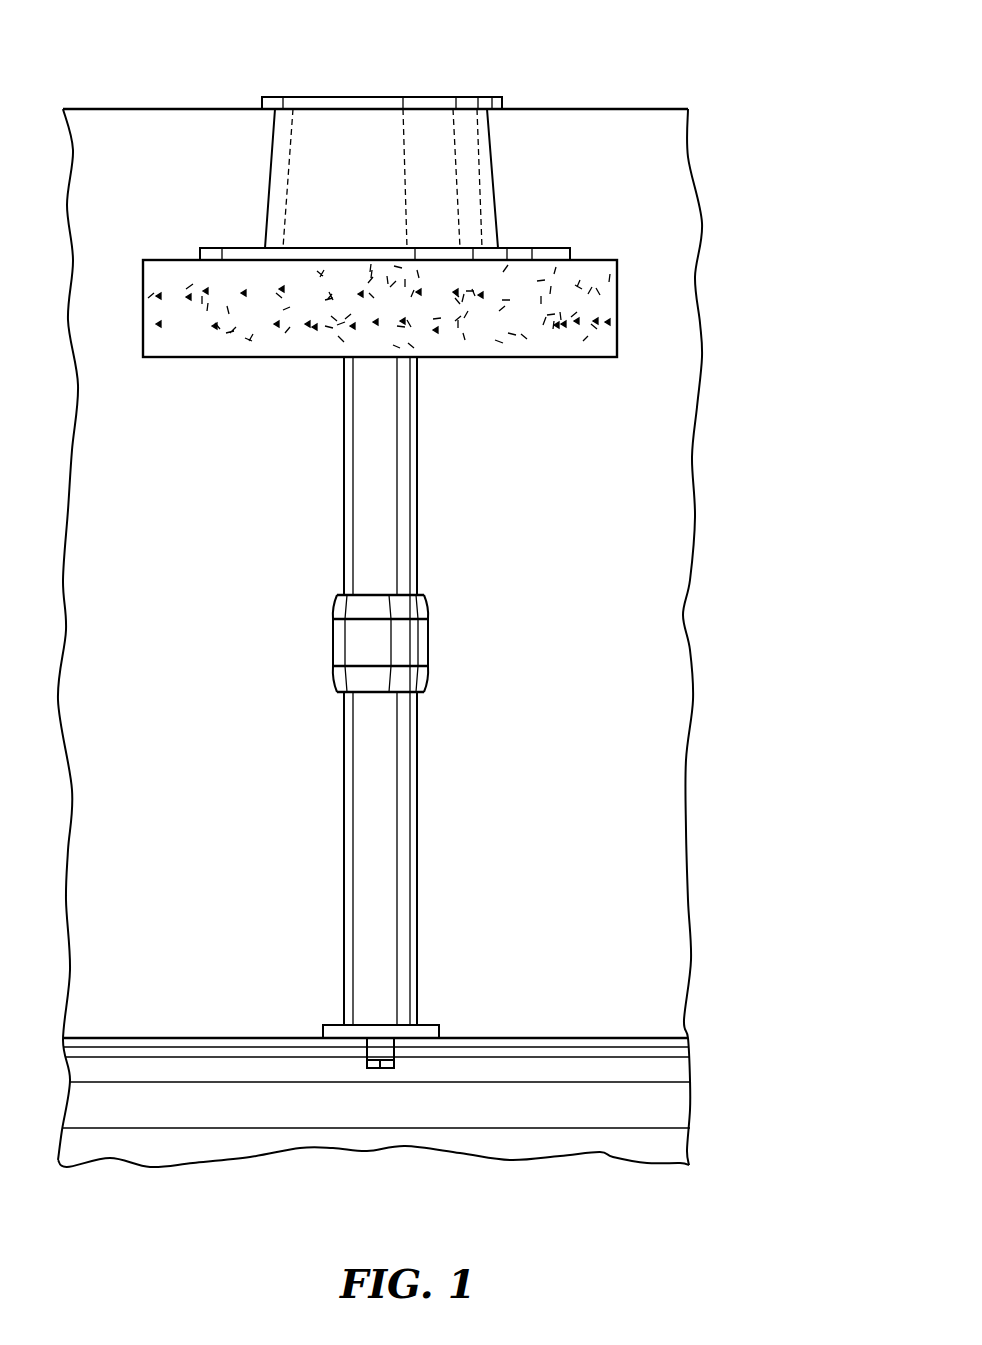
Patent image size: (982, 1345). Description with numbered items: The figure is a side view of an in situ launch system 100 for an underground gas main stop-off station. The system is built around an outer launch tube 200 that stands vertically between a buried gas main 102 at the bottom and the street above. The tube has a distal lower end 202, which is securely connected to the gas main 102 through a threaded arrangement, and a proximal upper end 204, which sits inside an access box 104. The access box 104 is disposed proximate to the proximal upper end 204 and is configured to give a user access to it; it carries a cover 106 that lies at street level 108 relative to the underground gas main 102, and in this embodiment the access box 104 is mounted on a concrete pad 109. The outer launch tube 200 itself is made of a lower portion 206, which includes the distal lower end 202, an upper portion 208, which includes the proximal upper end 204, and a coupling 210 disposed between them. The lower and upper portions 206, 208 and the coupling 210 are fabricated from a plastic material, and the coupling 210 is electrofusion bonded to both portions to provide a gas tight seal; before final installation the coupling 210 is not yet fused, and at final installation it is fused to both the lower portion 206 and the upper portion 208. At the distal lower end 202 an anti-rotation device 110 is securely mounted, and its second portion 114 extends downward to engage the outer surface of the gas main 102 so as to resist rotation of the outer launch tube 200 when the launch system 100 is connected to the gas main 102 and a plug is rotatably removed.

The in situ launch system 100 is at (736, 486).
The gas main 102 is at (635, 1065).
The access box 104 is at (462, 175).
The cover 106 is at (374, 96).
The street level 108 is at (148, 107).
The concrete pad 109 is at (172, 285).
The anti-rotation device 110 is at (400, 1030).
The second portion 114 is at (378, 1070).
The outer launch tube 200 is at (366, 691).
The distal lower end 202 is at (332, 1010).
The proximal upper end 204 is at (321, 377).
The lower portion 206 is at (400, 830).
The upper portion 208 is at (405, 443).
The coupling 210 is at (350, 640).